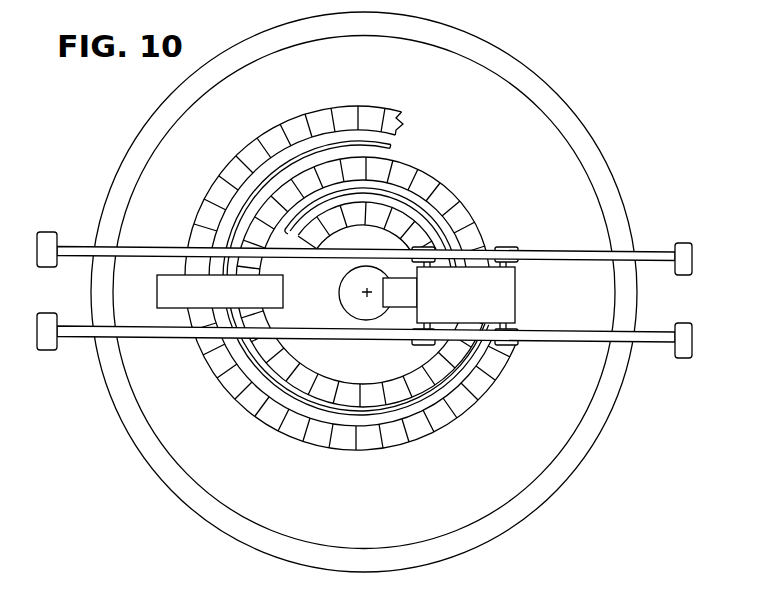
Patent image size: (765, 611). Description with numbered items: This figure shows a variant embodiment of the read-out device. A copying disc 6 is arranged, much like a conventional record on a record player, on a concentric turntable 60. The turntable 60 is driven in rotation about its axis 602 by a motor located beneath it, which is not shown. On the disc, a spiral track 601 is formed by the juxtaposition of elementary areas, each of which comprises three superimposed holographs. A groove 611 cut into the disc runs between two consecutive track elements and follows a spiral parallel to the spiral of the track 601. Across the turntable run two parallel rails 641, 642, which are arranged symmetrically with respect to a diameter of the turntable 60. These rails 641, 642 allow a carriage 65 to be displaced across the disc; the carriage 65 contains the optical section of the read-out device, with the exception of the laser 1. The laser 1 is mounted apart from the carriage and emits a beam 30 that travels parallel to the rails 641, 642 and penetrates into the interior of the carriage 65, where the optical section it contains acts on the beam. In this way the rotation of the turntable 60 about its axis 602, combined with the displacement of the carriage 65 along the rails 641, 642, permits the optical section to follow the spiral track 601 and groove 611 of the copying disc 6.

The laser 1 is at (181, 290).
The copying disc 6 is at (505, 118).
The turntable 60 is at (586, 143).
The spiral track 601 is at (298, 119).
The groove 611 is at (347, 143).
The carriage 65 is at (461, 293).
The rail 641 is at (572, 252).
The rail 642 is at (564, 341).
The beam 30 is at (341, 300).
The axis 602 is at (366, 296).